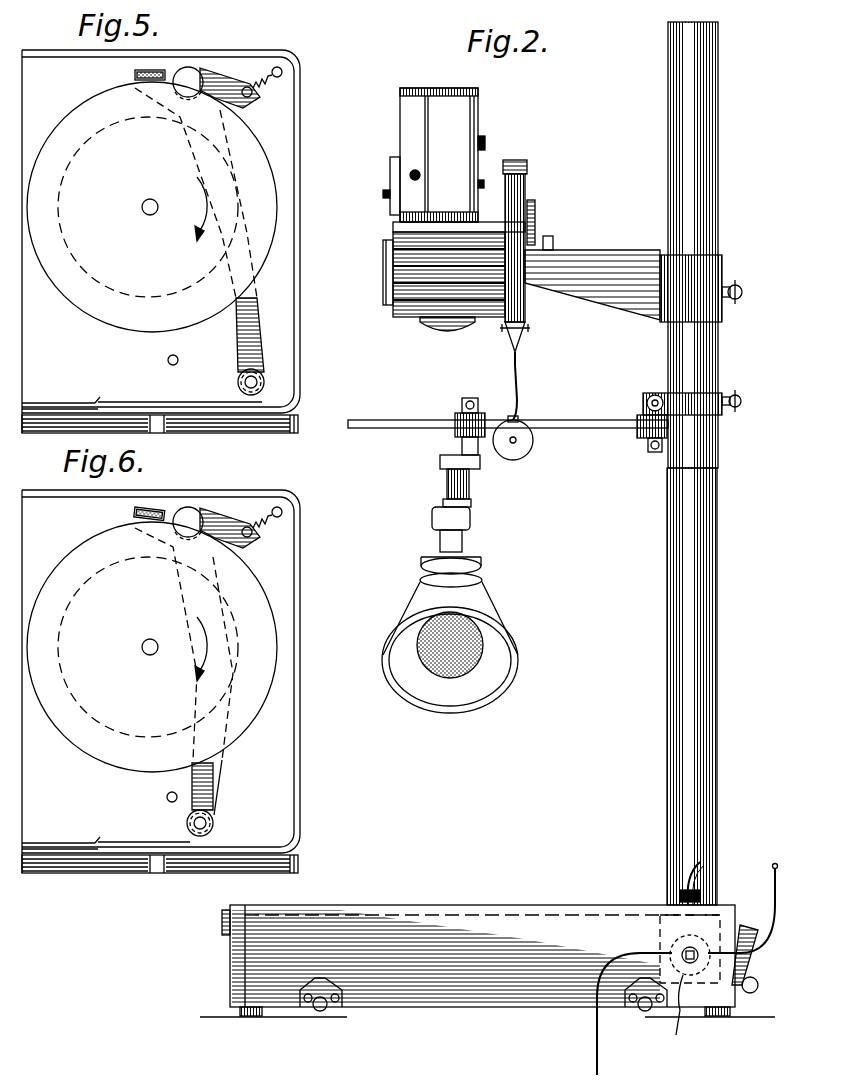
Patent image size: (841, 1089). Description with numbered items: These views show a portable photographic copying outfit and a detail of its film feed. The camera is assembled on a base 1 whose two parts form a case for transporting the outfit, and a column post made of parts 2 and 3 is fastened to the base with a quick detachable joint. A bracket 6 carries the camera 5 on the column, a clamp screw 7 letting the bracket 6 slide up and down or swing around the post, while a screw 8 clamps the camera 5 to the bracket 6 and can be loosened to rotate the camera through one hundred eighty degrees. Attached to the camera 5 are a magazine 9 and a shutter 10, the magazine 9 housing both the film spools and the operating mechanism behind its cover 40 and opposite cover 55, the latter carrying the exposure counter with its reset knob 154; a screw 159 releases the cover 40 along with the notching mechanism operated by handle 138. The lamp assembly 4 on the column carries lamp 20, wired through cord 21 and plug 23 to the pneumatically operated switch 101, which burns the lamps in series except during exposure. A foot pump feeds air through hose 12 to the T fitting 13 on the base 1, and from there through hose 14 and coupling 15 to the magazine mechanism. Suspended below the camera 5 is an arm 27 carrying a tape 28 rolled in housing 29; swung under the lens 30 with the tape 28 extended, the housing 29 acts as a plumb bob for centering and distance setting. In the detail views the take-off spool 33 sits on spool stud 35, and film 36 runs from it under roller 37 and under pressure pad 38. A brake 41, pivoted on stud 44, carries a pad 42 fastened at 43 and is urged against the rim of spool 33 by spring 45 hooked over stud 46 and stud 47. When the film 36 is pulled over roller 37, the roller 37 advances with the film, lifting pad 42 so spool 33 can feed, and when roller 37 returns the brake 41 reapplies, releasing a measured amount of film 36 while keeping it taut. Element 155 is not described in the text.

In FIG. 2, the base 1 is at (370, 894).
In FIG. 2, the column post part 2 is at (707, 530).
In FIG. 2, the column post part 3 is at (713, 188).
In FIG. 2, the lamp assembly 4 is at (585, 430).
In FIG. 2, the camera 5 is at (372, 238).
In FIG. 2, the bracket 6 is at (612, 264).
In FIG. 2, the clamp screw 7 is at (742, 292).
In FIG. 2, the screw 8 is at (555, 240).
In FIG. 5, the magazine 9 is at (303, 280).
In FIG. 6, the magazine 9 is at (303, 605).
In FIG. 2, the magazine 9 is at (478, 80).
In FIG. 2, the shutter 10 is at (445, 333).
In FIG. 2, the hose 12 is at (598, 1045).
In FIG. 2, the fitting 13 is at (676, 1017).
In FIG. 2, the hose 14 is at (776, 888).
In FIG. 2, the coupling 15 is at (417, 174).
In FIG. 2, the lamp 20 is at (432, 668).
In FIG. 2, the cord 21 is at (688, 865).
In FIG. 2, the plug 23 is at (697, 893).
In FIG. 2, the arm 27 is at (520, 343).
In FIG. 2, the tape 28 is at (518, 388).
In FIG. 2, the housing 29 is at (517, 452).
In FIG. 2, the lens 30 is at (530, 330).
In FIG. 5, the take-off spool 33 is at (95, 305).
In FIG. 6, the take-off spool 33 is at (90, 737).
In FIG. 5, the spool stud 35 is at (150, 215).
In FIG. 6, the spool stud 35 is at (146, 654).
In FIG. 5, the film 36 is at (150, 394).
In FIG. 6, the film 36 is at (130, 845).
In FIG. 5, the roller 37 is at (238, 382).
In FIG. 6, the roller 37 is at (210, 824).
In FIG. 5, the pressure pad 38 is at (57, 405).
In FIG. 6, the pressure pad 38 is at (57, 843).
In FIG. 2, the cover 40 is at (480, 110).
In FIG. 5, the brake 41 is at (245, 338).
In FIG. 6, the brake 41 is at (213, 770).
In FIG. 5, the pad 42 is at (133, 76).
In FIG. 6, the pad 42 is at (135, 512).
In FIG. 5, the fastening point 43 is at (147, 70).
In FIG. 6, the fastening point 43 is at (158, 507).
In FIG. 5, the stud 44 is at (190, 80).
In FIG. 6, the stud 44 is at (188, 520).
In FIG. 5, the spring 45 is at (262, 86).
In FIG. 6, the spring 45 is at (262, 528).
In FIG. 5, the stud 46 is at (250, 97).
In FIG. 6, the stud 46 is at (250, 540).
In FIG. 5, the stud 47 is at (282, 72).
In FIG. 6, the stud 47 is at (282, 512).
In FIG. 2, the cover 55 is at (408, 108).
In FIG. 2, the pneumatically operated switch 101 is at (680, 937).
In FIG. 2, the handle 138 is at (486, 182).
In FIG. 2, the reset knob 154 is at (385, 195).
In FIG. 2, the cover 155 is at (395, 165).
In FIG. 2, the screw 159 is at (488, 146).